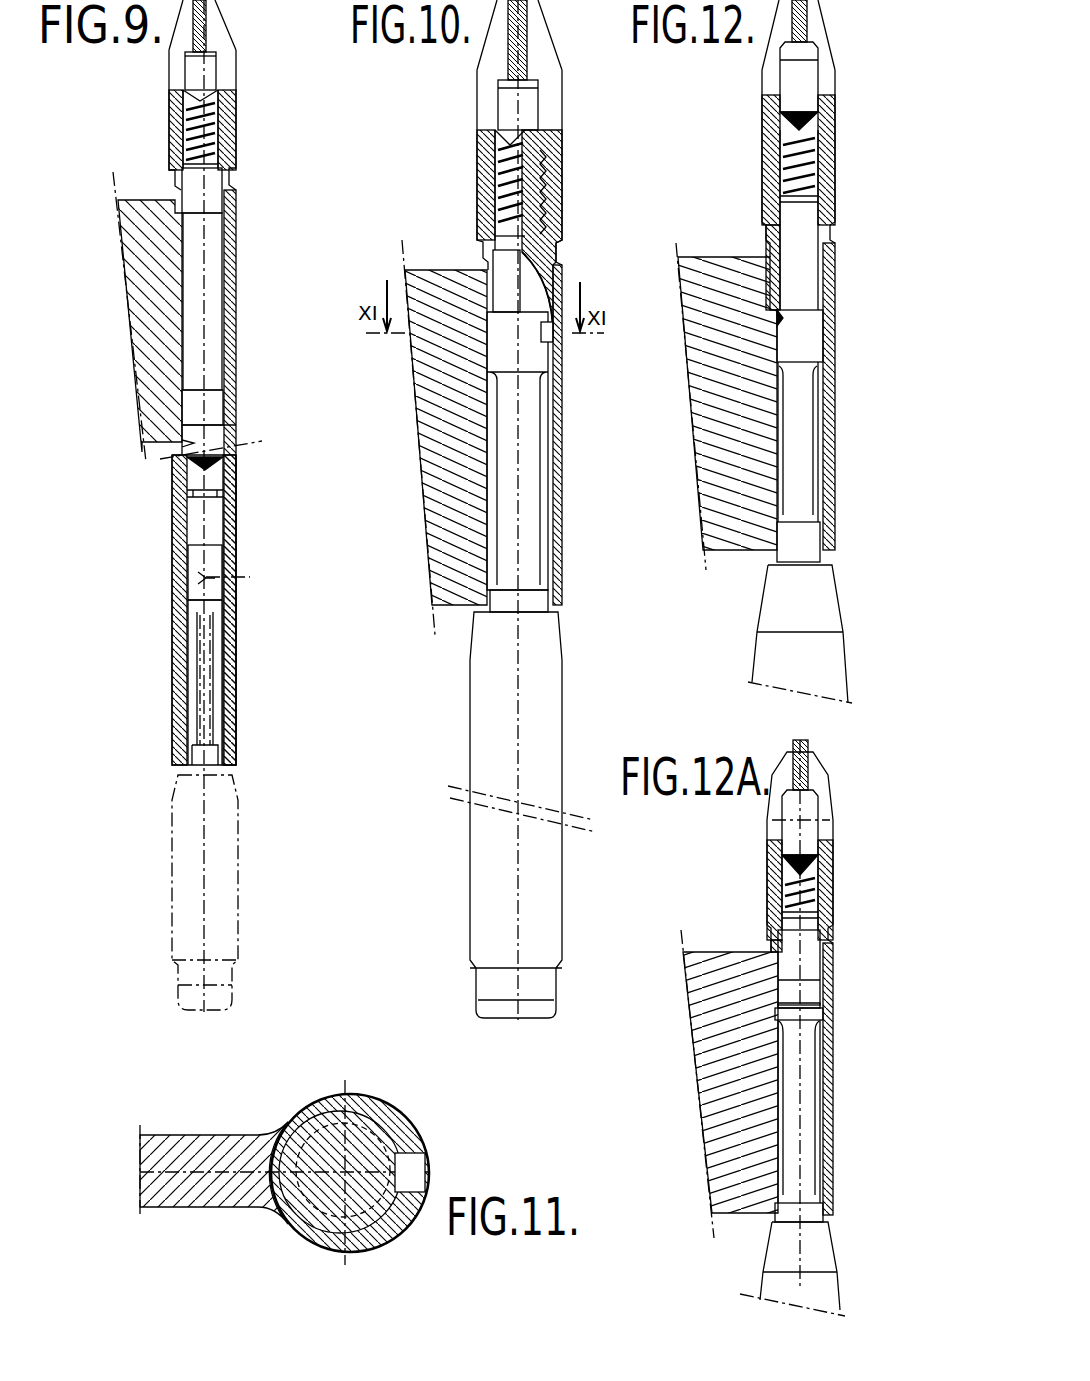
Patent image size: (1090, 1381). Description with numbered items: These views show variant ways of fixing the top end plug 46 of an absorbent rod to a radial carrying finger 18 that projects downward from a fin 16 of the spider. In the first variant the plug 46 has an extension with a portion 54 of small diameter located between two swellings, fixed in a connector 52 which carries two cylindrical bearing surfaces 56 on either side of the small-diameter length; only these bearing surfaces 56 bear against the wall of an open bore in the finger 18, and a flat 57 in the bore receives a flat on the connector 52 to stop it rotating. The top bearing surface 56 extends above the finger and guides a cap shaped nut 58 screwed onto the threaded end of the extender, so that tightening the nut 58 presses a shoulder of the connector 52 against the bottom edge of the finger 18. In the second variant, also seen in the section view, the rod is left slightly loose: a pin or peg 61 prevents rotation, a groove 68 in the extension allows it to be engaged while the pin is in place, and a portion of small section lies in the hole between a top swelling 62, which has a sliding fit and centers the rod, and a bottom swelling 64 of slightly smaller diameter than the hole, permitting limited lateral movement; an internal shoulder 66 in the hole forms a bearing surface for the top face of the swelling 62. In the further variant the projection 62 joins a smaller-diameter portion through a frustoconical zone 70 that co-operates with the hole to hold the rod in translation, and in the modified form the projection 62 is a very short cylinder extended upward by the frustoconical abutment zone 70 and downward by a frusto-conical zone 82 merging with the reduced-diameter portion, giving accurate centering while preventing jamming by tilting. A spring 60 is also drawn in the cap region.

In FIG. 9, the fin 16 is at (143, 339).
In FIG. 10, the fin 16 is at (458, 520).
In FIG. 12, the fin 16 is at (728, 487).
In FIG. 12A, the fin 16 is at (729, 1098).
In FIG. 11, the fin 16 is at (181, 1183).
In FIG. 9, the carrying finger 18 is at (228, 246).
In FIG. 10, the carrying finger 18 is at (556, 437).
In FIG. 12, the carrying finger 18 is at (829, 429).
In FIG. 12A, the carrying finger 18 is at (831, 1090).
In FIG. 11, the carrying finger 18 is at (290, 1212).
In FIG. 9, the plug 46 is at (242, 832).
In FIG. 10, the plug 46 is at (538, 666).
In FIG. 12, the plug 46 is at (806, 608).
In FIG. 12A, the plug 46 is at (792, 1269).
In FIG. 9, the connector 52 is at (215, 437).
In FIG. 9, the portion of small diameter 54 is at (192, 666).
In FIG. 9, the cylindrical bearing surface 56 is at (210, 192).
In FIG. 9, the flat 57 is at (222, 446).
In FIG. 9, the cap shaped nut 58 is at (213, 44).
In FIG. 10, the cap shaped nut 58 is at (540, 46).
In FIG. 12, the cap shaped nut 58 is at (799, 21).
In FIG. 12A, the cap shaped nut 58 is at (826, 812).
In FIG. 9, the spring 60 is at (219, 117).
In FIG. 10, the pin or peg 61 is at (548, 335).
In FIG. 11, the pin or peg 61 is at (420, 1170).
In FIG. 10, the top swelling 62 is at (500, 342).
In FIG. 12, the top swelling 62 is at (803, 350).
In FIG. 12A, the top swelling 62 is at (806, 1011).
In FIG. 11, the top swelling 62 is at (335, 1193).
In FIG. 10, the bottom swelling 64 is at (530, 597).
In FIG. 12, the bottom swelling 64 is at (793, 541).
In FIG. 12A, the bottom swelling 64 is at (808, 1213).
In FIG. 10, the internal shoulder 66 is at (490, 300).
In FIG. 10, the groove 68 is at (535, 296).
In FIG. 12, the frustoconical zone 70 is at (778, 320).
In FIG. 12A, the frustoconical zone 70 is at (820, 1003).
In FIG. 12A, the frusto-conical zone 82 is at (806, 1020).